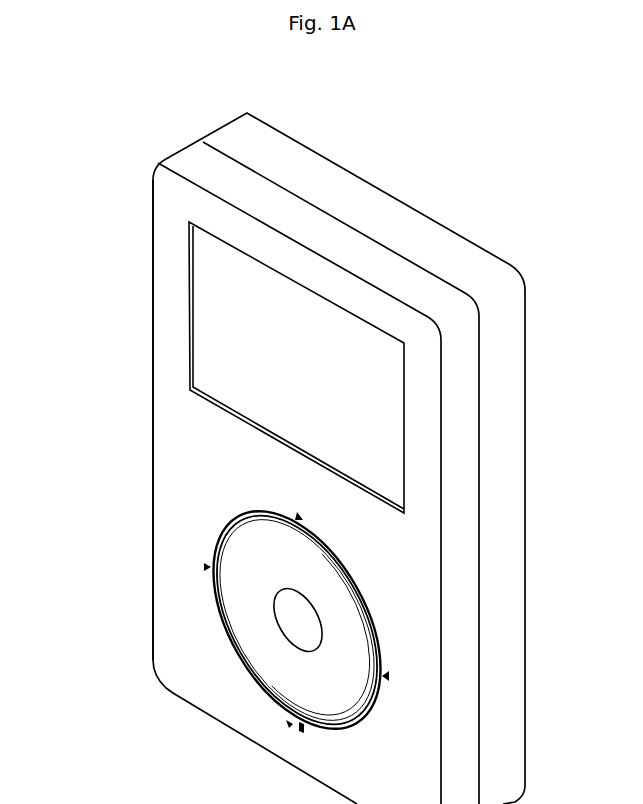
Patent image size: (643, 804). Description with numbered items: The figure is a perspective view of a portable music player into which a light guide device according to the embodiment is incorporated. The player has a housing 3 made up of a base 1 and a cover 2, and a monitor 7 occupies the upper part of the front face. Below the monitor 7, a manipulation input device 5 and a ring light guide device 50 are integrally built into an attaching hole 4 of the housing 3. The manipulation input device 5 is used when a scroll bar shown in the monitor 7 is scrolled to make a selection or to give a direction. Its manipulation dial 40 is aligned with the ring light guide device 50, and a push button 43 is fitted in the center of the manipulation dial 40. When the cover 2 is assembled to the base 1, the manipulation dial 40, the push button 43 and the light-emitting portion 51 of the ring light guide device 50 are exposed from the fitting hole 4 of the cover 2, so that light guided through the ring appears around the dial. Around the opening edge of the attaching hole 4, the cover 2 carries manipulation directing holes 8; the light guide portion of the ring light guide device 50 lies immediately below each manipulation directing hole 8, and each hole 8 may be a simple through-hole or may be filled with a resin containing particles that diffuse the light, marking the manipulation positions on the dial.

The base 1 is at (349, 458).
The housing 3 is at (433, 238).
The cover 2 is at (172, 362).
The monitor 7 is at (387, 407).
The attaching hole 4 is at (365, 603).
The manipulation dial 40 is at (209, 619).
The manipulation input device 5 is at (237, 602).
The push button 43 is at (294, 622).
The ring light guide device 50 is at (425, 620).
The light-emitting portion 51 is at (352, 727).
The manipulation directing hole 8 is at (299, 514).